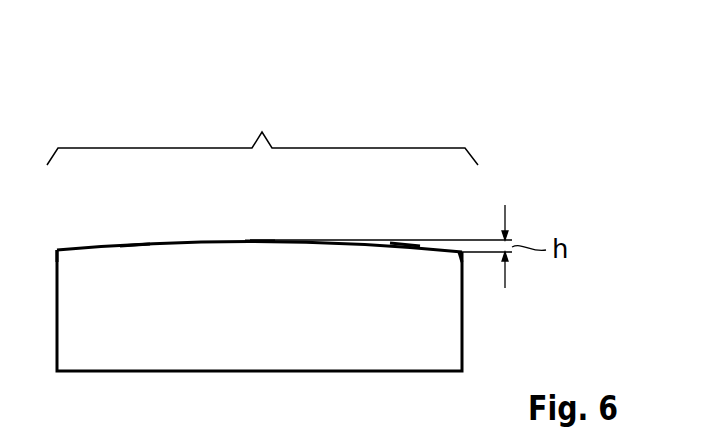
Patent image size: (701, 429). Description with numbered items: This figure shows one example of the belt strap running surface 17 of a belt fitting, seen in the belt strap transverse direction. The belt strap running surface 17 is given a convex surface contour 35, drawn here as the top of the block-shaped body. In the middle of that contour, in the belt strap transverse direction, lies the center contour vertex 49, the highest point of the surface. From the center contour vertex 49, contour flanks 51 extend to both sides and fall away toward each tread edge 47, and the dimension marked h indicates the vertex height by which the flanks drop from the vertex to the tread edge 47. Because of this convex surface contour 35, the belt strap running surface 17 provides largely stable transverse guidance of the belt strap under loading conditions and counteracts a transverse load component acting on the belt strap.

The belt strap running surface 17 is at (277, 328).
The surface contour 35 is at (262, 132).
The tread edge 47 is at (61, 249).
The center contour vertex 49 is at (260, 240).
The contour flanks 51 is at (135, 245).